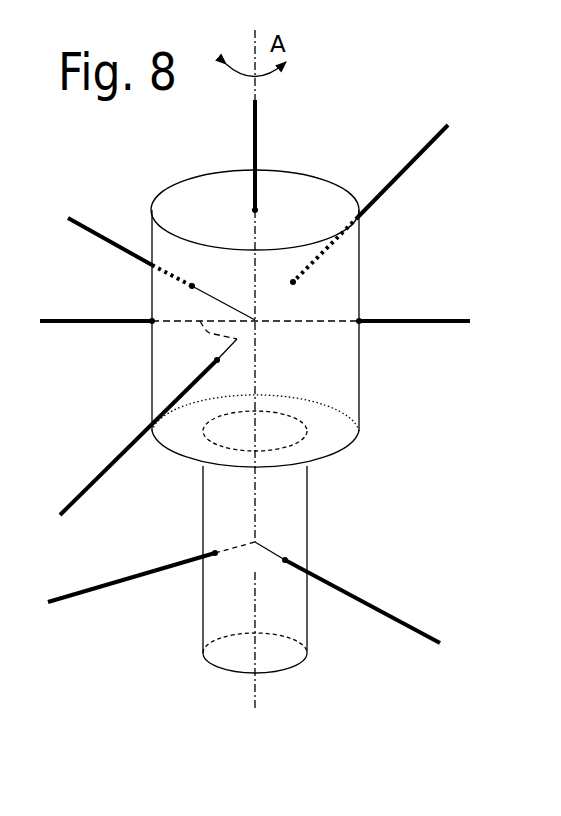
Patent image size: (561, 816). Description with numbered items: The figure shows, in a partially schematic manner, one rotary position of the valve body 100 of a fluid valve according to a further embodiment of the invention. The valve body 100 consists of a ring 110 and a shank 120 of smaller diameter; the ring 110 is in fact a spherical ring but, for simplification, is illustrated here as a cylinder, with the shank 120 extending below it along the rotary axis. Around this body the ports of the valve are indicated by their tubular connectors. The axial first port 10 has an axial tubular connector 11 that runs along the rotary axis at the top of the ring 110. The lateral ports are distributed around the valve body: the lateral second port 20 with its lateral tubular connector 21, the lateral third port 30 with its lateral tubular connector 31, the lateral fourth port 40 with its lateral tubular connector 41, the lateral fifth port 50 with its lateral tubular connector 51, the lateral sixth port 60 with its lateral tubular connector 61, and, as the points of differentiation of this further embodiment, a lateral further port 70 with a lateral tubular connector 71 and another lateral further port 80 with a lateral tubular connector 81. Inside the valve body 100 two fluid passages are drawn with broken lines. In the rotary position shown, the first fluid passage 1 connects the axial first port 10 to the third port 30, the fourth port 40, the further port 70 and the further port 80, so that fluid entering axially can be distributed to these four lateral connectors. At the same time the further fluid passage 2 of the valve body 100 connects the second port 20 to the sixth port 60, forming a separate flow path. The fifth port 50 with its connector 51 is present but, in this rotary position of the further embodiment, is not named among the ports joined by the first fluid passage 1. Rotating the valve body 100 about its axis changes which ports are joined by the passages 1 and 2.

The valve body 100 is at (482, 246).
The axial first port 10 is at (192, 286).
The axial tubular connector 11 is at (257, 145).
The ring 110 is at (152, 240).
The shank 120 is at (308, 607).
The lateral second port 20 is at (217, 362).
The lateral tubular connector 21 is at (140, 432).
The lateral third port 30 is at (286, 558).
The lateral tubular connector 31 is at (412, 625).
The lateral fourth port 40 is at (360, 316).
The lateral tubular connector 41 is at (393, 323).
The lateral fifth port 50 is at (293, 282).
The lateral tubular connector 51 is at (400, 175).
The lateral sixth port 60 is at (152, 318).
The lateral tubular connector 61 is at (115, 323).
The lateral further port 70 is at (253, 210).
The lateral tubular connector 71 is at (110, 240).
The lateral further port 80 is at (213, 557).
The lateral tubular connector 81 is at (112, 588).
The first fluid passage 1 is at (257, 272).
The further fluid passage 2 is at (216, 334).